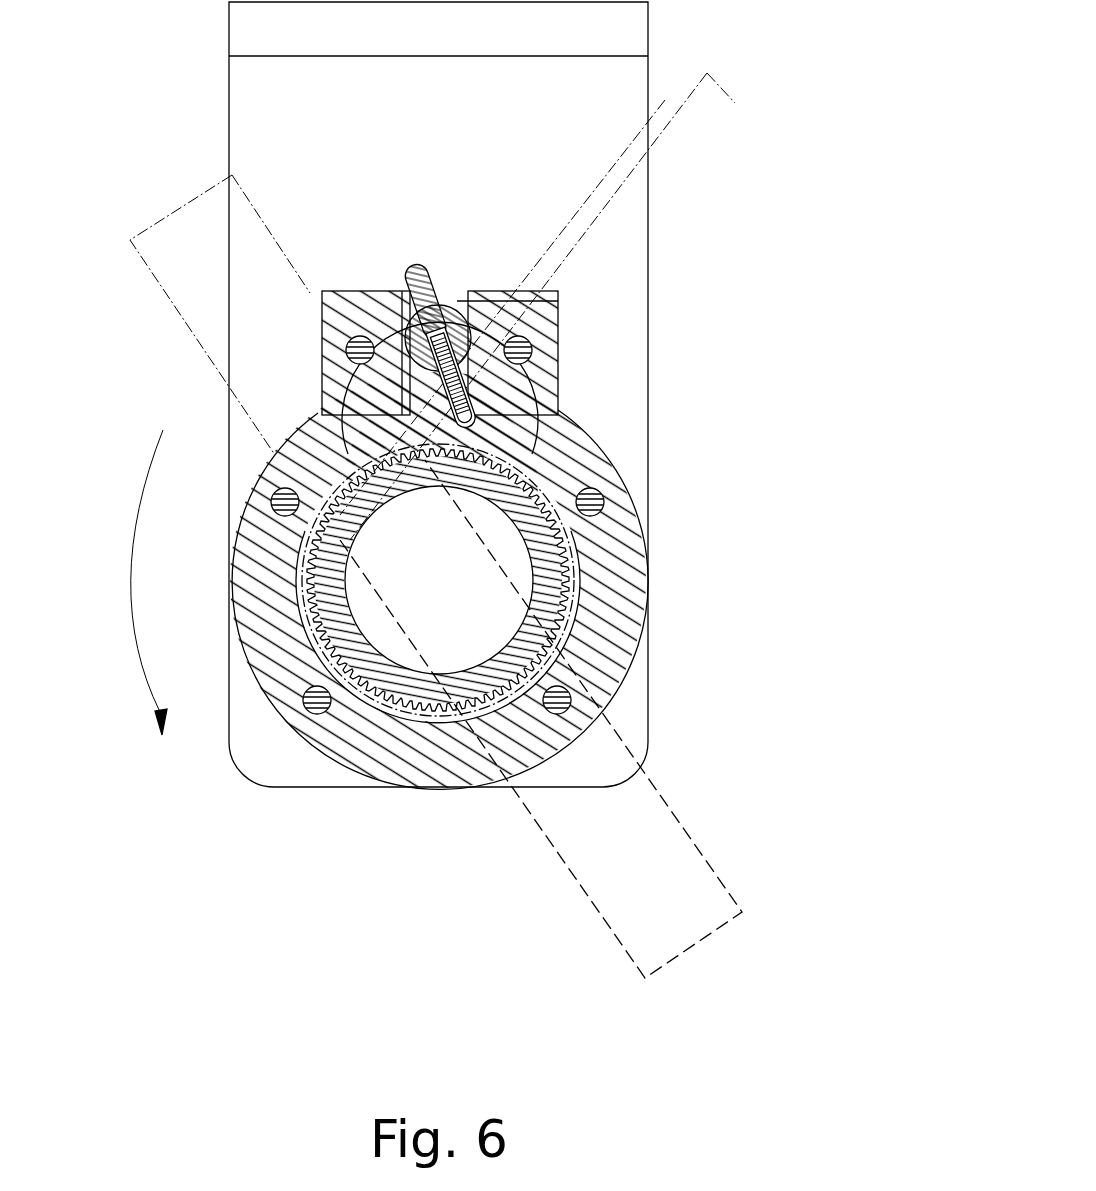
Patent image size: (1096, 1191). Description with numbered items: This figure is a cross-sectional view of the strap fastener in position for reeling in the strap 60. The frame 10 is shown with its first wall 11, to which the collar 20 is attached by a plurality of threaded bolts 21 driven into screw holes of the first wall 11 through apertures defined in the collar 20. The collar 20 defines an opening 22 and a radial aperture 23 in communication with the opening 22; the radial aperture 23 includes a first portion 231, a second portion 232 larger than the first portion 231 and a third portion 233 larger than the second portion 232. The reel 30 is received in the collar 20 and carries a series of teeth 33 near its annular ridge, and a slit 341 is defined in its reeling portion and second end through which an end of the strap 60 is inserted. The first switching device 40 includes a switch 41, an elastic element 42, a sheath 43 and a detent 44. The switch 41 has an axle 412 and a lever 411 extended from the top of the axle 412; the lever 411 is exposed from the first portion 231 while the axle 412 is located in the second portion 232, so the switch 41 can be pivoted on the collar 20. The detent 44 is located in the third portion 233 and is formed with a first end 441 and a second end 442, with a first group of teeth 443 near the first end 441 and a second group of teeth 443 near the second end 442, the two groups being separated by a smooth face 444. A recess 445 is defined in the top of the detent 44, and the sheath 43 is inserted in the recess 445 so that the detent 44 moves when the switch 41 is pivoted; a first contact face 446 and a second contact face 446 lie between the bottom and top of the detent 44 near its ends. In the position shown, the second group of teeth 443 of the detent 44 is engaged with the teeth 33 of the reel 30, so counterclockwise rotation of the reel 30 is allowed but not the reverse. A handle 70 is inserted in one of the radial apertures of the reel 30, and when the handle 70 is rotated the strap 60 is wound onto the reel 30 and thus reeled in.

The frame 10 is at (692, 31).
The first wall 11 is at (613, 97).
The collar 20 is at (348, 800).
The threaded bolts 21 is at (571, 697).
The opening 22 is at (505, 555).
The radial aperture 23 is at (450, 291).
The first portion 231 is at (557, 303).
The second portion 232 is at (520, 350).
The third portion 233 is at (525, 408).
The reel 30 is at (317, 687).
The teeth 33 is at (390, 684).
The slit 341 is at (545, 668).
The first switching device 40 is at (467, 249).
The switch 41 is at (418, 312).
The lever 411 is at (410, 265).
The axle 412 is at (408, 330).
The elastic element 42 is at (335, 333).
The sheath 43 is at (400, 340).
The detent 44 is at (500, 420).
The first end 441 is at (370, 422).
The second end 442 is at (525, 478).
The teeth 443 is at (412, 440).
The smooth face 444 is at (335, 470).
The recess 445 is at (405, 370).
The contact faces 446 is at (320, 415).
The strap 60 is at (670, 122).
The handle 70 is at (660, 850).